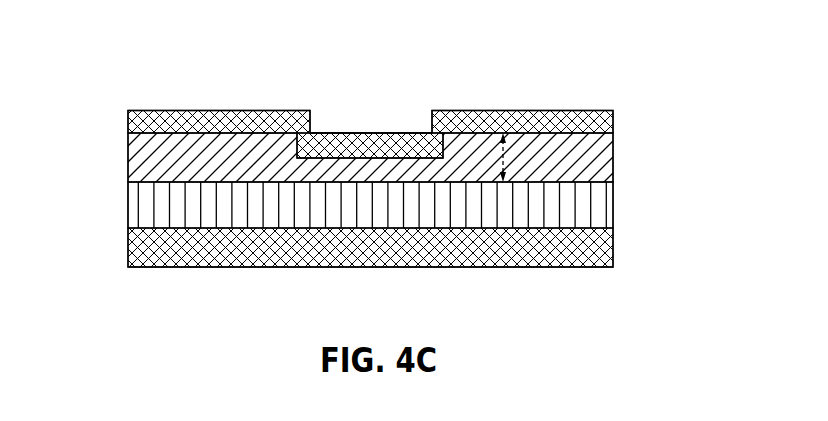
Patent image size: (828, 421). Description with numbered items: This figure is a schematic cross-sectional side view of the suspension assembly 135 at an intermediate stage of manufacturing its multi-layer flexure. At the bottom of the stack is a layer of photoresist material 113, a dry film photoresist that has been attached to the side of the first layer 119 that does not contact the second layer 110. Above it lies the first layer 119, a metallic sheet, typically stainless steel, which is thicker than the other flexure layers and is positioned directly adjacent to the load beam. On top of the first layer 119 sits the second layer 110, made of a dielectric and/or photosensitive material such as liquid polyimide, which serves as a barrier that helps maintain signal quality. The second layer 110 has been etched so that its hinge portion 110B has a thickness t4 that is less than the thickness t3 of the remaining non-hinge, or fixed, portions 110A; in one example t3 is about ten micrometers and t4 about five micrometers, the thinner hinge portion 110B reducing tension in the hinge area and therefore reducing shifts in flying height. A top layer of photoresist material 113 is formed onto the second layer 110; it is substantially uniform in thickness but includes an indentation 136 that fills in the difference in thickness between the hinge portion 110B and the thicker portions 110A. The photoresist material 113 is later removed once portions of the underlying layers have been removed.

The suspension assembly 135 is at (565, 48).
The second layer 110 is at (128, 160).
The non-hinge portion of the second layer 110A is at (192, 128).
The hinge portion of the second layer 110B is at (327, 156).
The indentation 136 is at (400, 133).
The thickness of the hinge portion t4 is at (346, 180).
The thickness of the non-hinge portion t3 is at (503, 153).
The first layer 119 is at (613, 207).
The photoresist material 113 is at (128, 249).